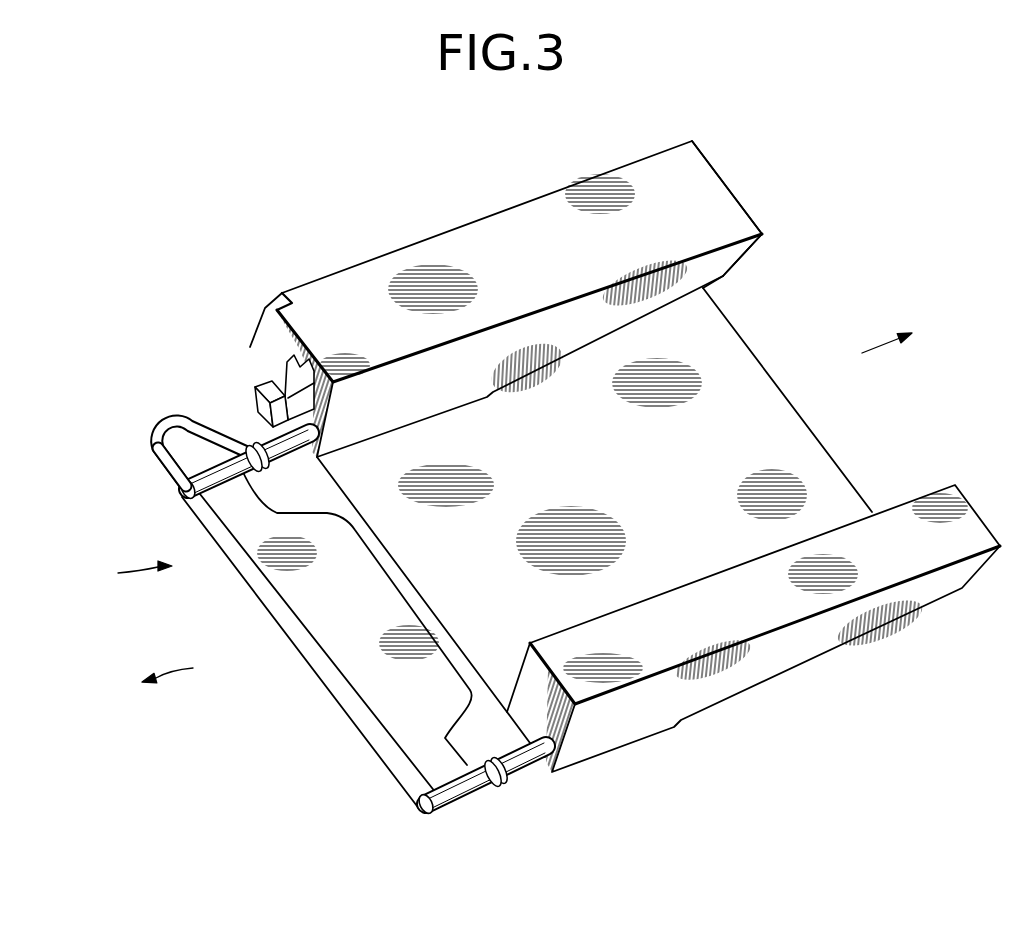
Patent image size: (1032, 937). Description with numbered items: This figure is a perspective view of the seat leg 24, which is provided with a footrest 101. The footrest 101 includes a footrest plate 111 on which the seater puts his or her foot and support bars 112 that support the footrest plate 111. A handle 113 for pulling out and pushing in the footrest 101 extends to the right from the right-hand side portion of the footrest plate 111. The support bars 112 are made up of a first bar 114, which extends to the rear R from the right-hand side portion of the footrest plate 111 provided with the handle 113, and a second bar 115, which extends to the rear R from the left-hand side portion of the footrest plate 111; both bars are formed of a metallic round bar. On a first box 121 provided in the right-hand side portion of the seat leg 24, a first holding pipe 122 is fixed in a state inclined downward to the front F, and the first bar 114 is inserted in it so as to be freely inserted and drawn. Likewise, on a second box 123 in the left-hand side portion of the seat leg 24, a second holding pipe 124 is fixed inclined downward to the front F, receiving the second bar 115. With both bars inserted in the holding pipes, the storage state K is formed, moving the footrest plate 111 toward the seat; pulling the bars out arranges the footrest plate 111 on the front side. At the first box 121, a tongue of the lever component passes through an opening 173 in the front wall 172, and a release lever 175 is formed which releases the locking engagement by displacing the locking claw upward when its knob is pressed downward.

The footrest 101 is at (145, 238).
The footrest plate 111 is at (342, 640).
The support bars 112 is at (400, 832).
The handle 113 is at (140, 404).
The first bar 114 is at (180, 470).
The second bar 115 is at (434, 773).
The first box 121 is at (463, 240).
The first holding pipe 122 is at (250, 425).
The second box 123 is at (783, 603).
The second holding pipe 124 is at (538, 782).
The front wall 172 is at (288, 341).
The opening 173 is at (288, 378).
The release lever 175 is at (240, 382).
The seat leg 24 is at (718, 158).
The storage state K is at (130, 559).
The front F is at (156, 685).
The rear R is at (901, 331).